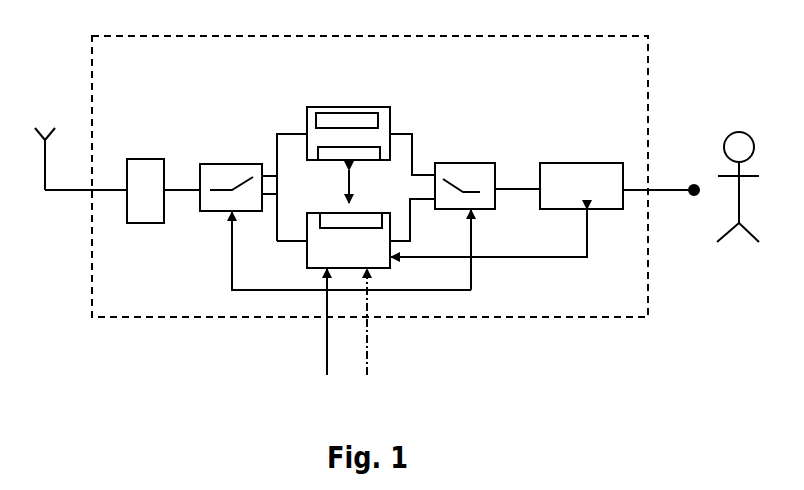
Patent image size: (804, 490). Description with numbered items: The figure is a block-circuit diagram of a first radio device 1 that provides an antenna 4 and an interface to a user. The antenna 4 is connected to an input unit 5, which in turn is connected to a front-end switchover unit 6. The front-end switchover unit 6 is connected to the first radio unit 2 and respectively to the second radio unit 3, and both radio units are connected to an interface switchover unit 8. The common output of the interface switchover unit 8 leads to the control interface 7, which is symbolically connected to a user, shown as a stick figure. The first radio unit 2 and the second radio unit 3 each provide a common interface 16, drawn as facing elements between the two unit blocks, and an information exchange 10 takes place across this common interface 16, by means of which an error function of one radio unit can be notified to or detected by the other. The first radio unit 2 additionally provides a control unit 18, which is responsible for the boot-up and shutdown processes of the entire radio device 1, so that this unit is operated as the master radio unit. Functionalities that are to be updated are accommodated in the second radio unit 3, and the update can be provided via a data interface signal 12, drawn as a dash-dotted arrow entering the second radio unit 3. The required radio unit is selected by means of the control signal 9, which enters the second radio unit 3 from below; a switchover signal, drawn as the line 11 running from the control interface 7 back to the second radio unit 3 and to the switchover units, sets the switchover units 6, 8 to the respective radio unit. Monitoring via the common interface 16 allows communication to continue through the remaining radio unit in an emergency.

The radio device 1 is at (647, 62).
The first radio unit 2 is at (345, 136).
The second radio unit 3 is at (307, 262).
The antenna 4 is at (45, 153).
The input unit 5 is at (147, 223).
The front-end switchover unit 6 is at (228, 164).
The control interface 7 is at (560, 163).
The interface switchover unit 8 is at (468, 163).
The control signal 9 is at (327, 343).
The information exchange 10 is at (352, 192).
The feedback signal line 11 is at (512, 257).
The data interface signal 12 is at (367, 357).
The common interface 16 is at (327, 150).
The control unit 18 is at (325, 118).